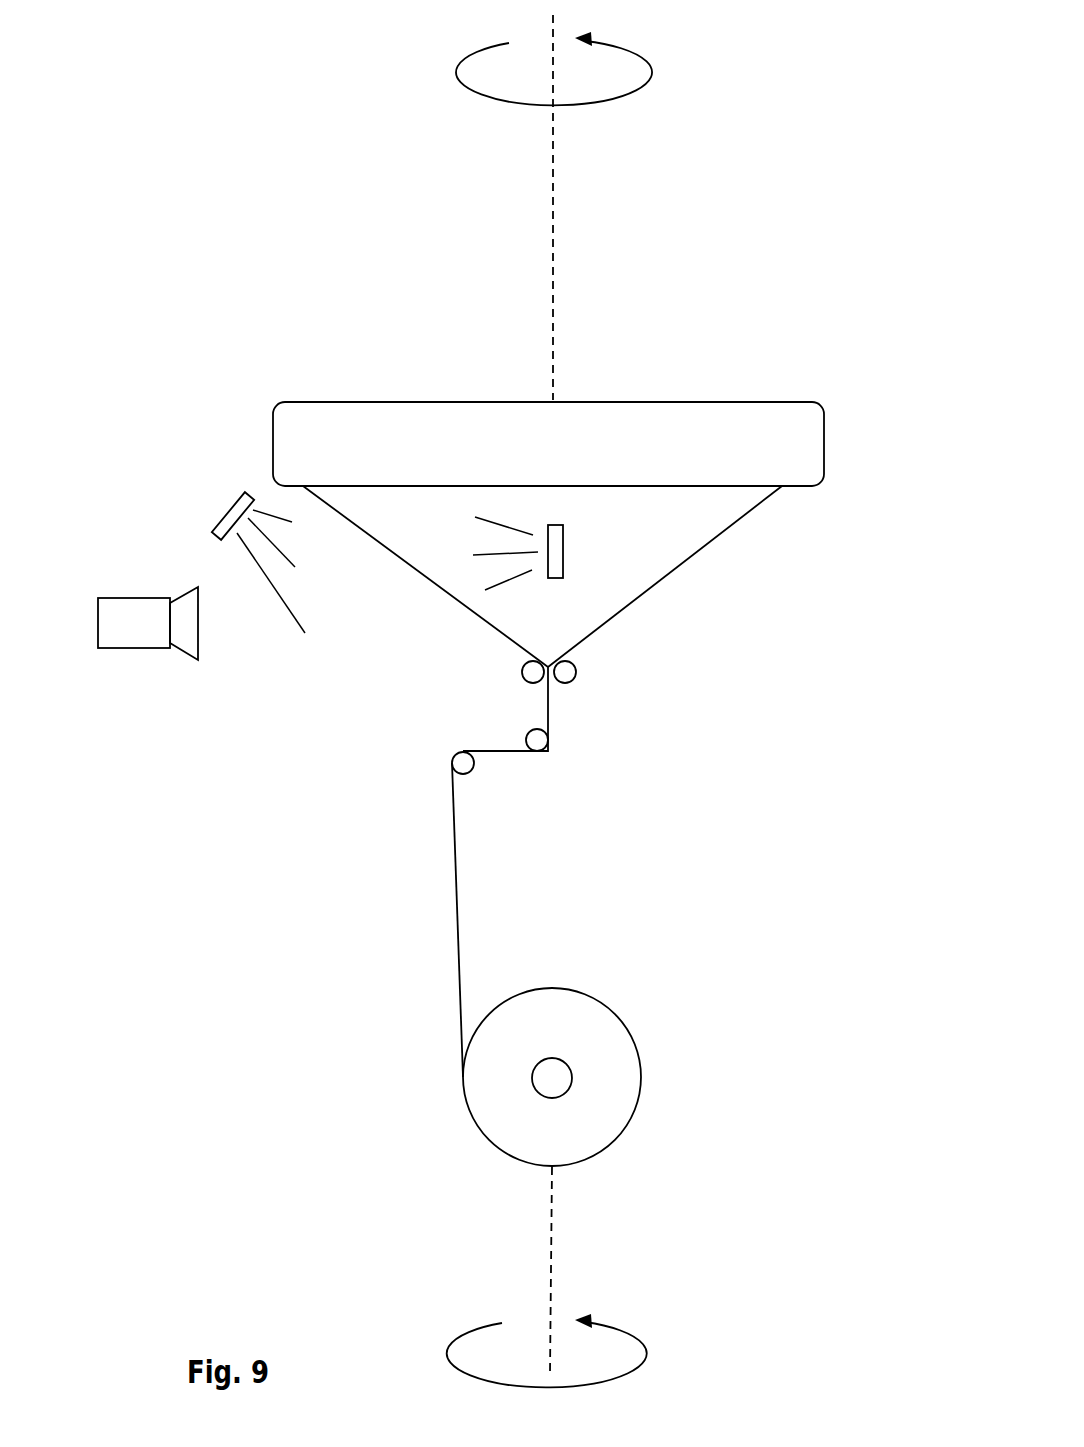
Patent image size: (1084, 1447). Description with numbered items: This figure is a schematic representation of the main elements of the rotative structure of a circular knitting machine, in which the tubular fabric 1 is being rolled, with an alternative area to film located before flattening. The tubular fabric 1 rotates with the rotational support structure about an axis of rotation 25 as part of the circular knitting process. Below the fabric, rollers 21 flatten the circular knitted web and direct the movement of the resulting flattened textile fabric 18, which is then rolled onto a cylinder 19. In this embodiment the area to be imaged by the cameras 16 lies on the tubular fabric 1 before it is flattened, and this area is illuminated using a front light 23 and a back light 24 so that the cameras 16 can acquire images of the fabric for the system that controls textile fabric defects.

The tubular fabric 1 is at (793, 504).
The cameras 16 is at (110, 660).
The flattened textile fabric 18 is at (442, 923).
The cylinder 19 is at (650, 1073).
The rollers 21 is at (578, 692).
The front light 23 is at (207, 505).
The back light 24 is at (573, 552).
The axis of rotation 25 is at (562, 255).